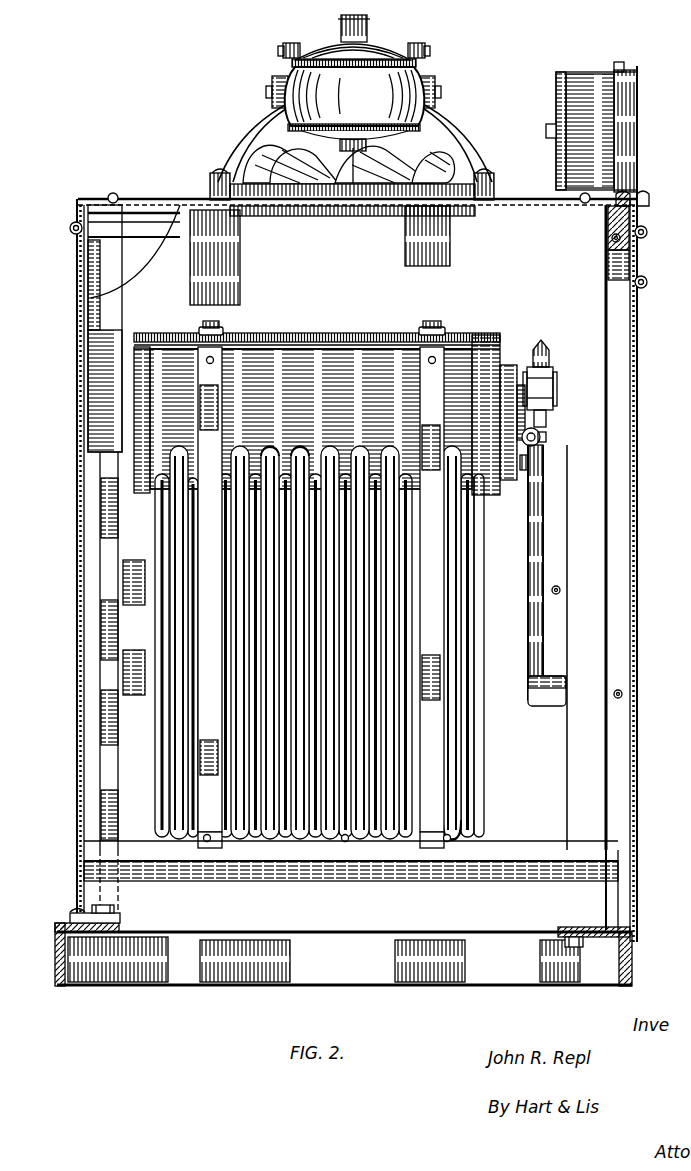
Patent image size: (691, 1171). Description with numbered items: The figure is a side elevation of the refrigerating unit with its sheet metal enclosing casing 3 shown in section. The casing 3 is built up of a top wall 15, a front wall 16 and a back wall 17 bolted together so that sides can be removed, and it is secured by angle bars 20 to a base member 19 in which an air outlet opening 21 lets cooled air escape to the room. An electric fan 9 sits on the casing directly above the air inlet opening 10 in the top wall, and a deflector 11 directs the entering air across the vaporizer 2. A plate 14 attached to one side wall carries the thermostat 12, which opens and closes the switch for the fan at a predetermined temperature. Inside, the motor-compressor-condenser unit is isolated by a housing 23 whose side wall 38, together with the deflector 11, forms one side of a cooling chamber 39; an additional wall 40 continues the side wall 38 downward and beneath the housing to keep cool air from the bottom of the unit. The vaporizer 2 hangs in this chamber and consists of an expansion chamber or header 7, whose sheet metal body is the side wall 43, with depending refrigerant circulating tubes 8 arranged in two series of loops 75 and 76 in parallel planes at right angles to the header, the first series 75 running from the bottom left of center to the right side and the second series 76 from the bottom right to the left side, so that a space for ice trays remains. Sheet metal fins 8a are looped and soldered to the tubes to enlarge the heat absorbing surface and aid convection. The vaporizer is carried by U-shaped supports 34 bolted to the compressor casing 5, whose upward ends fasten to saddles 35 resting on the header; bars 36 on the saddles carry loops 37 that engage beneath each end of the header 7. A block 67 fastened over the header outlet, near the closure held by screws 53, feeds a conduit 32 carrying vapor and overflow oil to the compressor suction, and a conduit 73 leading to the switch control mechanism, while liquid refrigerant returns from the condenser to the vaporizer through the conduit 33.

The vaporizer 2 is at (311, 419).
The sheet metal enclosing casing 3 is at (76, 258).
The compressor casing 5 is at (178, 445).
The expansion chamber or header 7 is at (296, 334).
The refrigerant circulating tubes 8 is at (410, 808).
The heat absorbing fins 8a is at (405, 728).
The electric fan 9 is at (352, 107).
The air inlet opening 10 is at (345, 216).
The deflector 11 is at (600, 267).
The thermostat 12 is at (578, 137).
The plate 14 is at (644, 201).
The top wall 15 is at (150, 199).
The front wall 16 is at (77, 566).
The back wall 17 is at (638, 521).
The base member 19 is at (208, 986).
The angle bars 20 is at (80, 905).
The air outlet opening 21 is at (560, 929).
The housing 23 is at (548, 803).
The suction conduit 32 is at (545, 520).
The liquid refrigerant conduit 33 is at (546, 438).
The U-shaped supports 34 is at (222, 384).
The saddles 35 is at (222, 330).
The bars 36 is at (346, 348).
The loops 37 is at (148, 372).
The side wall of housing 38 is at (505, 620).
The cooling chamber 39 is at (585, 299).
The additional wall 40 is at (356, 933).
The side wall of chamber 43 is at (266, 348).
The screws 53 is at (548, 420).
The plate or block 67 is at (553, 391).
The conduit 73 is at (550, 350).
The first series of expansion coils 75 is at (190, 588).
The second series of expansion coils 76 is at (284, 450).